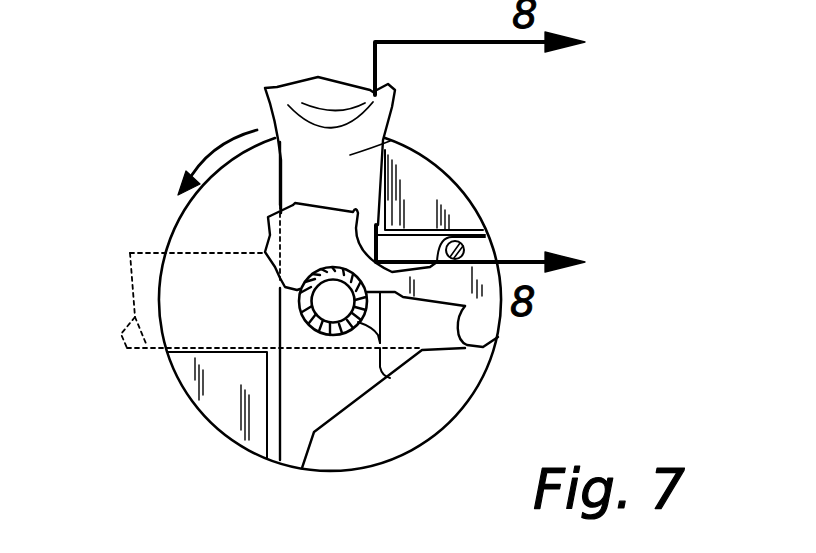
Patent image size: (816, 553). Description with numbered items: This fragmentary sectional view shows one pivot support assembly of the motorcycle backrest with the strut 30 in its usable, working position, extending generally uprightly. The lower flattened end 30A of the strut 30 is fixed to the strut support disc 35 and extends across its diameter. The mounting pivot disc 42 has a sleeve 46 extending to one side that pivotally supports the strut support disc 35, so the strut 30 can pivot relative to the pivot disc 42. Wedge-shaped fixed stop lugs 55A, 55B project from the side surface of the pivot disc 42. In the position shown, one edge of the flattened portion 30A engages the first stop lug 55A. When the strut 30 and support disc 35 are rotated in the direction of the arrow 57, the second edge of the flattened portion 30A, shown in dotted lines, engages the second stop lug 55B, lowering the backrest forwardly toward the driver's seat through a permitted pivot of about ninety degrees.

The strut 30 is at (387, 97).
The flattened end of the strut 30A is at (393, 140).
The strut support disc 35 is at (470, 347).
The mounting pivot disc 42 is at (222, 212).
The sleeve 46 is at (380, 365).
The first stop lug 55A is at (443, 190).
The second stop lug 55B is at (227, 408).
The arrow 57 is at (217, 158).